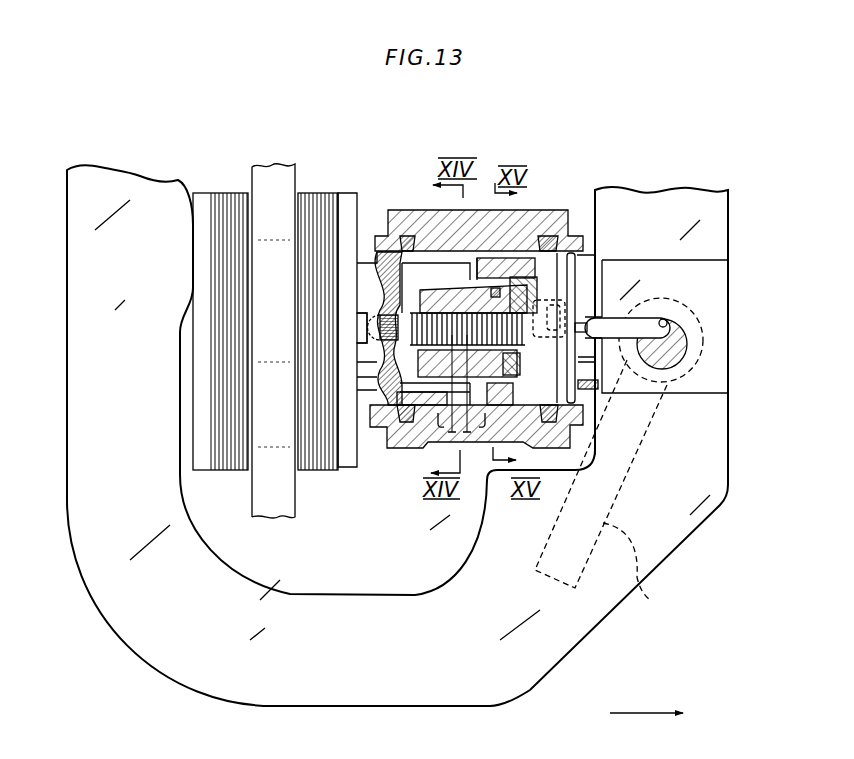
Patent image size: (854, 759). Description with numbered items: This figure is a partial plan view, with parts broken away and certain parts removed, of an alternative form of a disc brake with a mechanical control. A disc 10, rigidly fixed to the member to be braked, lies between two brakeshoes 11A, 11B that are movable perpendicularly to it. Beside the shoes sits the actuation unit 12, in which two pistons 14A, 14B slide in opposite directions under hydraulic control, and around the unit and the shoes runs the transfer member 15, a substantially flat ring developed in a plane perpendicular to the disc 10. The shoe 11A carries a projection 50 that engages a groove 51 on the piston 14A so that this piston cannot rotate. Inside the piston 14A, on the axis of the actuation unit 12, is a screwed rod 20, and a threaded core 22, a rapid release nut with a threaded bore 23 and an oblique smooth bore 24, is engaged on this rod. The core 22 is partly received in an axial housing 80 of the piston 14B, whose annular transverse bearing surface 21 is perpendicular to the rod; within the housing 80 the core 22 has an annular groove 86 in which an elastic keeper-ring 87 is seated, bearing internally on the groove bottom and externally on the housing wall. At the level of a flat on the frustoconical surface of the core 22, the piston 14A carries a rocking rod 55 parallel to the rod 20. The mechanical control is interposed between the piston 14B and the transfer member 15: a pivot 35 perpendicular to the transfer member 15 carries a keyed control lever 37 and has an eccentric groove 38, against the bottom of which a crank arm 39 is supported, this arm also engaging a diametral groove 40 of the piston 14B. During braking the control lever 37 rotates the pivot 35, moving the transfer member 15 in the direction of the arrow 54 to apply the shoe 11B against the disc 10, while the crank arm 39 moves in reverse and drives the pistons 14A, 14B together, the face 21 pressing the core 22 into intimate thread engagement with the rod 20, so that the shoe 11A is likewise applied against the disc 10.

The disc 10 is at (270, 166).
The brakeshoe 11A is at (333, 191).
The brakeshoe 11B is at (213, 191).
The actuation unit 12 is at (430, 209).
The piston 14A is at (366, 259).
The piston 14B is at (590, 254).
The transfer member 15 is at (612, 606).
The screwed rod 20 is at (388, 437).
The annular transverse bearing surface 21 is at (522, 328).
The threaded core 22 is at (430, 279).
The threaded bore 23 is at (442, 316).
The smooth bore 24 is at (513, 297).
The pivot 35 is at (684, 345).
The control lever 37 is at (606, 486).
The eccentric groove 38 is at (666, 322).
The crank arm 39 is at (632, 327).
The diametral groove 40 is at (602, 322).
The projection 50 is at (356, 320).
The groove 51 is at (363, 332).
The arrow 54 is at (640, 712).
The rocking rod 55 is at (430, 415).
The axial housing 80 is at (490, 392).
The annular groove 86 is at (515, 380).
The elastic keeper-ring 87 is at (500, 296).